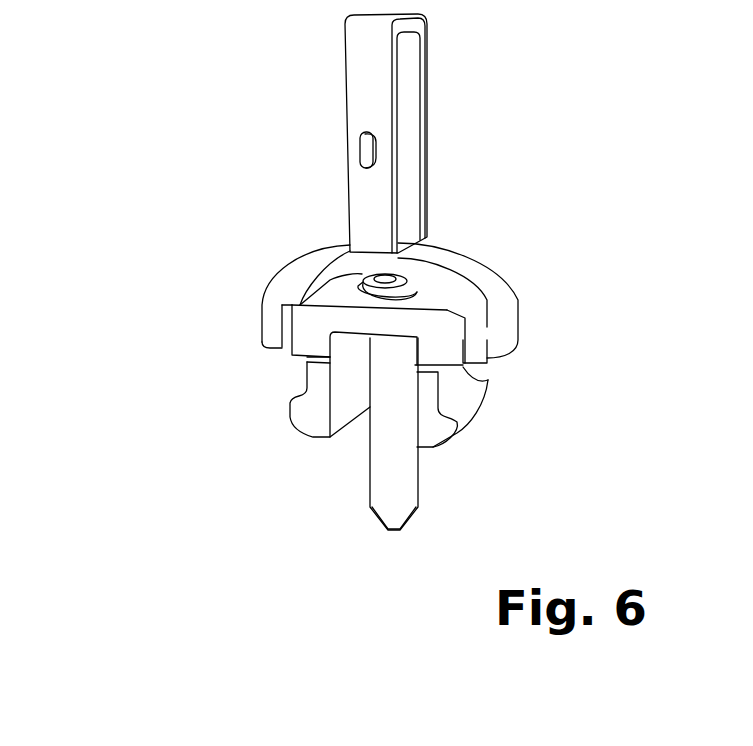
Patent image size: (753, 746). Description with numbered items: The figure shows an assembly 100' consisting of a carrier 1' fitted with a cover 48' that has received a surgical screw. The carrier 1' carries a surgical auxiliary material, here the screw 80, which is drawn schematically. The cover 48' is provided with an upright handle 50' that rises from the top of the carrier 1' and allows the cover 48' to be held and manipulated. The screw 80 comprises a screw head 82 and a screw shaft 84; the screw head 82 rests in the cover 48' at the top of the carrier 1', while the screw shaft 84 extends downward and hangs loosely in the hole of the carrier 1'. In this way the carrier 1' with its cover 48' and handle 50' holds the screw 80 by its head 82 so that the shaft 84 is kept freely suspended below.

The electrical connector assembly 100' is at (288, 272).
The handle 50' is at (341, 133).
The cover 48' is at (361, 298).
The screw head 82 is at (402, 291).
The carrier 1' is at (344, 389).
The screw 80 is at (363, 447).
The screw shaft 84 is at (402, 465).